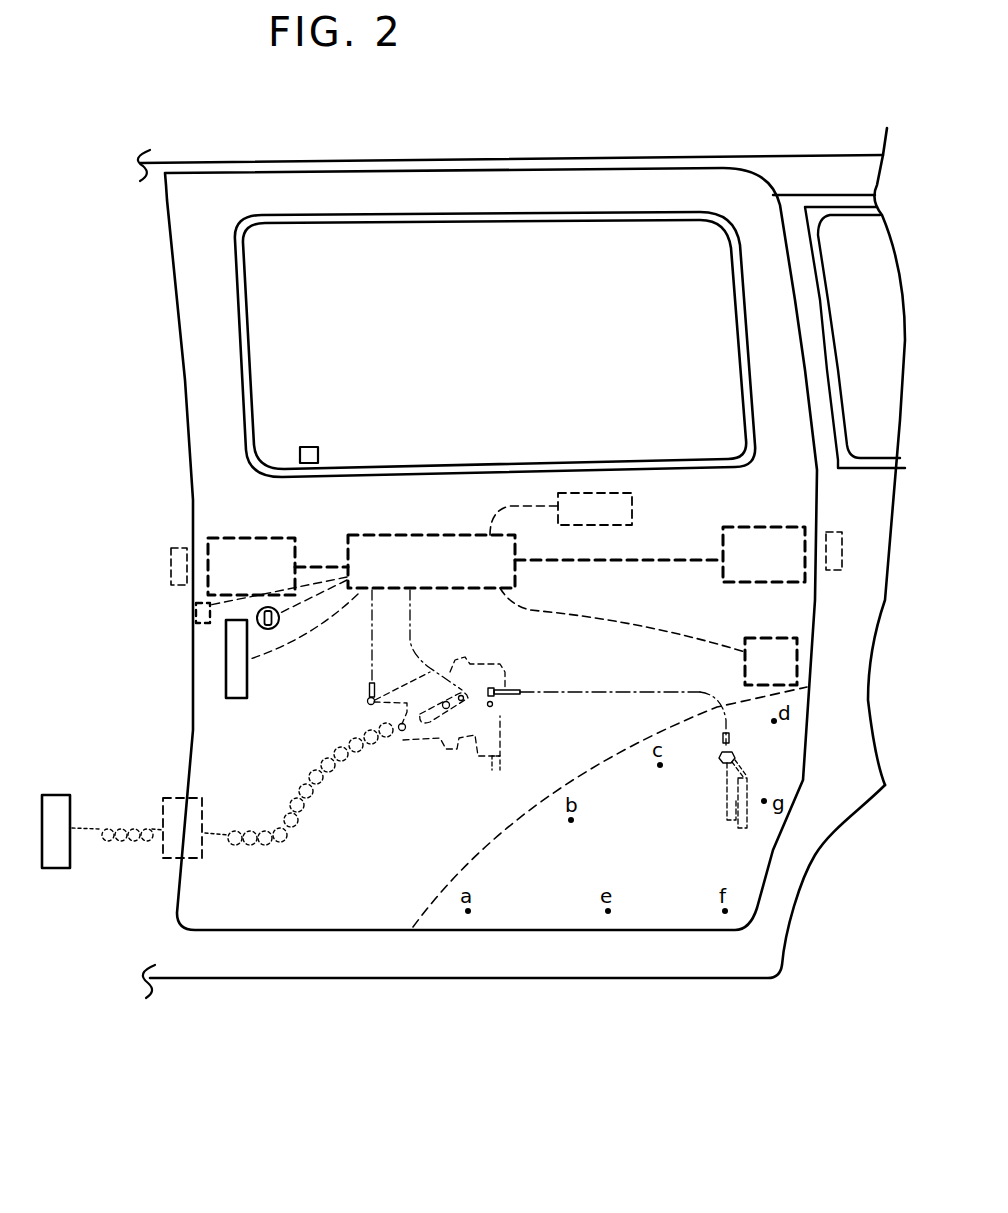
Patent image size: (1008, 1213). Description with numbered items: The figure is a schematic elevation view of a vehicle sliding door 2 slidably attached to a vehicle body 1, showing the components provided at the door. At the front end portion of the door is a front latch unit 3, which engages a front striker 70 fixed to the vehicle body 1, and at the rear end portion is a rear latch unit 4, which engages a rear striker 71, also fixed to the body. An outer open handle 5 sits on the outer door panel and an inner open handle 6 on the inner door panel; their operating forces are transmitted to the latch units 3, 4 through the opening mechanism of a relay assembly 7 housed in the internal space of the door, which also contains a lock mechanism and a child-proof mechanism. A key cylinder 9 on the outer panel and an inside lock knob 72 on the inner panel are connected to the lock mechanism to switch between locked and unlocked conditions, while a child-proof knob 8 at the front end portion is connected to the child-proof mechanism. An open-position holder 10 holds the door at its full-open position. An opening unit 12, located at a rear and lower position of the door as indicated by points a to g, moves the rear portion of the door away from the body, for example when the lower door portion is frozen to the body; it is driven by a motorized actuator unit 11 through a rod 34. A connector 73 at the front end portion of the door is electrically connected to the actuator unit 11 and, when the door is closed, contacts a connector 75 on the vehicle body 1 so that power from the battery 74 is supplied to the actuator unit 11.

The vehicle body 1 is at (478, 963).
The sliding door 2 is at (505, 190).
The front latch unit 3 is at (245, 538).
The rear latch unit 4 is at (760, 527).
The outer open handle 5 is at (238, 658).
The inner open handle 6 is at (592, 493).
The relay assembly 7 is at (420, 552).
The child-proof knob 8 is at (196, 614).
The key cylinder 9 is at (257, 621).
The open-position holder 10 is at (772, 662).
The motorized actuator unit 11 is at (444, 725).
The opening unit 12 is at (727, 796).
The connecting rod 34 is at (562, 694).
The front striker 70 is at (170, 568).
The rear striker 71 is at (842, 558).
The inside lock knob 72 is at (318, 447).
The connector 73 is at (205, 803).
The battery 74 is at (57, 803).
The connector 75 is at (172, 808).